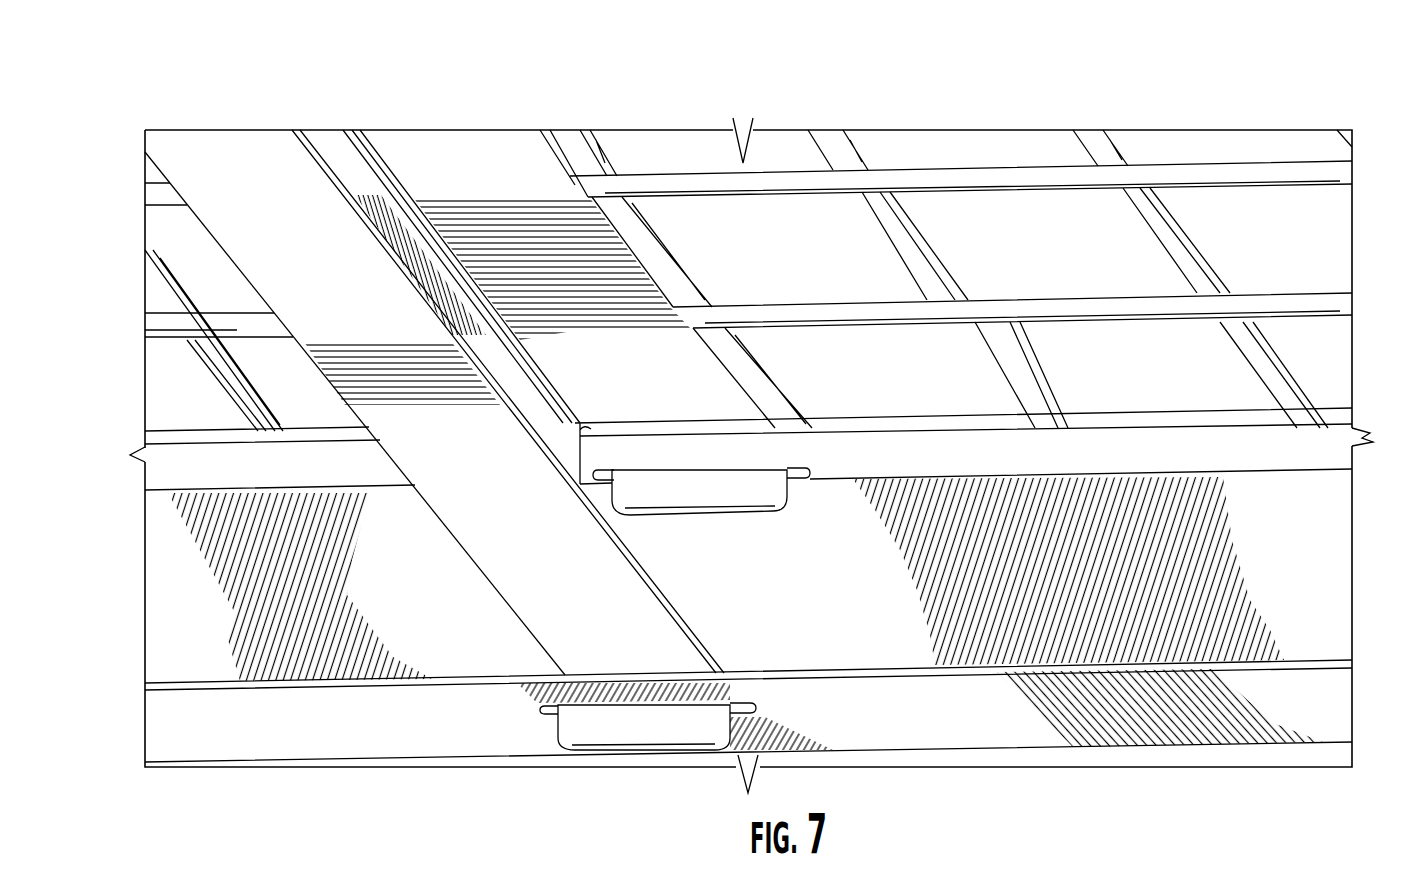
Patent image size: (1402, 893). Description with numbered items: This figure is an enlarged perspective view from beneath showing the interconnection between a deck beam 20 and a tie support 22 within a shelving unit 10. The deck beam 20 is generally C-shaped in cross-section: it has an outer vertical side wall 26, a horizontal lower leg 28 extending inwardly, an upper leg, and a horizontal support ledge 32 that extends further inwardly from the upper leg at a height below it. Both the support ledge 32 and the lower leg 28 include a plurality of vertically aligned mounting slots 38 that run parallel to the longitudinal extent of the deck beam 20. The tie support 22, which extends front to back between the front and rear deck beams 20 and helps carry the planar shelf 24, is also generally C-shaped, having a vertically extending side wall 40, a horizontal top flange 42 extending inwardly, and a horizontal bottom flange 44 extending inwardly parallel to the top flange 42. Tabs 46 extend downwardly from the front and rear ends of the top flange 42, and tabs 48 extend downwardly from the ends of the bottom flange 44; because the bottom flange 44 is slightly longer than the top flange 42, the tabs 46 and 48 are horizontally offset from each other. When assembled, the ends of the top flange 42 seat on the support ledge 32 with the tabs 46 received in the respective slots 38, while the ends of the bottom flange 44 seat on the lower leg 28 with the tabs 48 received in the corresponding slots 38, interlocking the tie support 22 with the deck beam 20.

The roof assembly 10 is at (1176, 120).
The deck beam 20 is at (1066, 746).
The tie support 22 is at (445, 146).
The planar shelf 24 is at (808, 176).
The outer vertical side wall 26 is at (293, 622).
The horizontal lower leg 28 is at (1262, 708).
The horizontal support ledge 32 is at (1190, 450).
The mounting slot 38 is at (537, 710).
The vertically extending side wall 40 is at (340, 153).
The horizontal top flange 42 is at (514, 168).
The horizontal bottom flange 44 is at (255, 236).
The tab 46 is at (672, 488).
The tab 48 is at (578, 745).